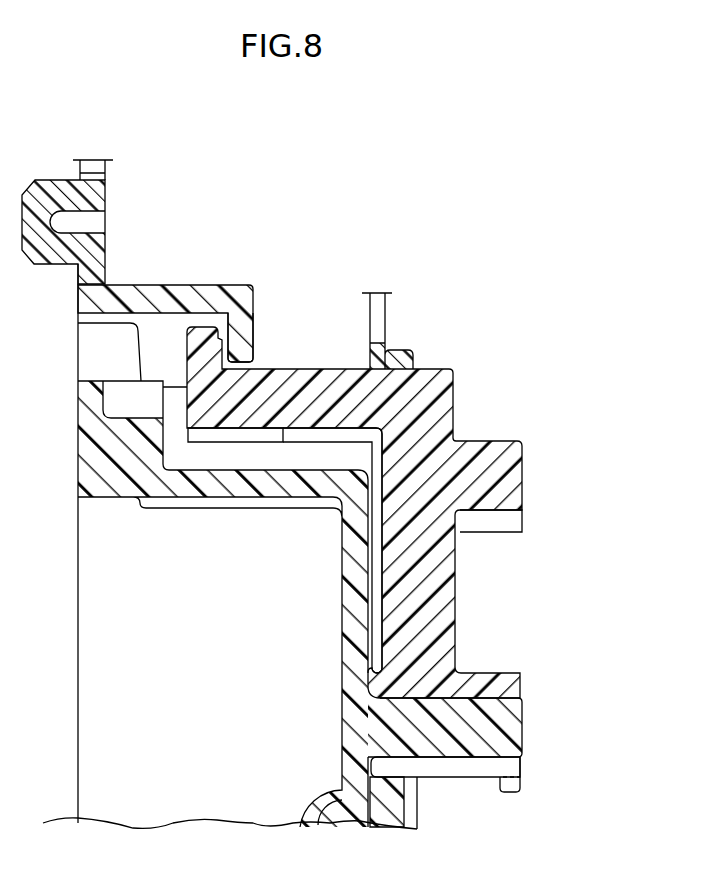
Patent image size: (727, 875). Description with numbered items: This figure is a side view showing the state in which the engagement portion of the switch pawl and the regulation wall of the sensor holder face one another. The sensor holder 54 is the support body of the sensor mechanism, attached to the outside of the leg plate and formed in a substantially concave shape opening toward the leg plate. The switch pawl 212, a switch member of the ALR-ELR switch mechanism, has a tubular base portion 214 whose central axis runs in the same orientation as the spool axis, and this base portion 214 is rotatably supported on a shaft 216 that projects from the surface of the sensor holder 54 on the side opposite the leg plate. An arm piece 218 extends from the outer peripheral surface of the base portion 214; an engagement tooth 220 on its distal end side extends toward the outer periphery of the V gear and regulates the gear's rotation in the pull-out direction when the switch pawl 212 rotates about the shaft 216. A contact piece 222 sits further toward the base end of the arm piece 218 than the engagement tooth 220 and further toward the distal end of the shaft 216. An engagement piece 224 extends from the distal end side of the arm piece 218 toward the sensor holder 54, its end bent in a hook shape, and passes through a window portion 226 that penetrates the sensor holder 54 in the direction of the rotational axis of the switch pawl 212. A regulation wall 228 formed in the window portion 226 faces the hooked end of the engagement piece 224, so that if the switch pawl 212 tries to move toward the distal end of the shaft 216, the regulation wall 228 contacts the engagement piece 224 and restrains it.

The sensor holder 54 is at (105, 193).
The switch pawl 212 is at (549, 617).
The base portion 214 is at (468, 778).
The shaft 216 is at (522, 711).
The arm piece 218 is at (456, 638).
The engagement tooth 220 is at (227, 443).
The contact piece 222 is at (495, 533).
The engagement piece 224 is at (303, 431).
The window portion 226 is at (232, 322).
The regulation wall 228 is at (255, 332).